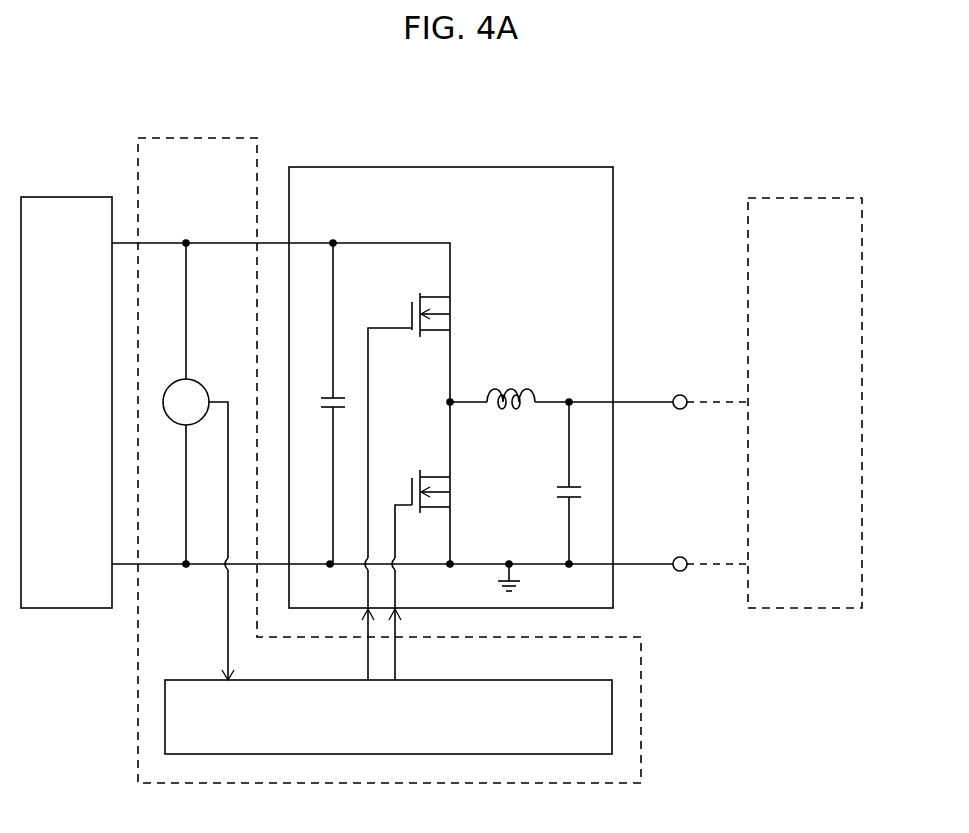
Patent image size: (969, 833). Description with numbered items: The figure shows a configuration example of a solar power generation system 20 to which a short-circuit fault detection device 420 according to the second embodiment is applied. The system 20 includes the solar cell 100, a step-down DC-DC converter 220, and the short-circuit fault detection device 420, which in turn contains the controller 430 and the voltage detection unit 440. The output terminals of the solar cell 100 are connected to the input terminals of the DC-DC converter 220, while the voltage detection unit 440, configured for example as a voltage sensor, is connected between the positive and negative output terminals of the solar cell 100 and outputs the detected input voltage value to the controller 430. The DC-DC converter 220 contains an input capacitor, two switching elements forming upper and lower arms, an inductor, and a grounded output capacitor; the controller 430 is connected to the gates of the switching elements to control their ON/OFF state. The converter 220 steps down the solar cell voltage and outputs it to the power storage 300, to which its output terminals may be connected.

The solar power generation system 20 is at (909, 92).
The solar cell 100 is at (68, 373).
The step-down DC-DC converter 220 is at (451, 399).
The power storage 300 is at (805, 376).
The short-circuit fault detection device 420 is at (389, 433).
The controller 430 is at (388, 699).
The voltage detection unit 440 is at (199, 461).